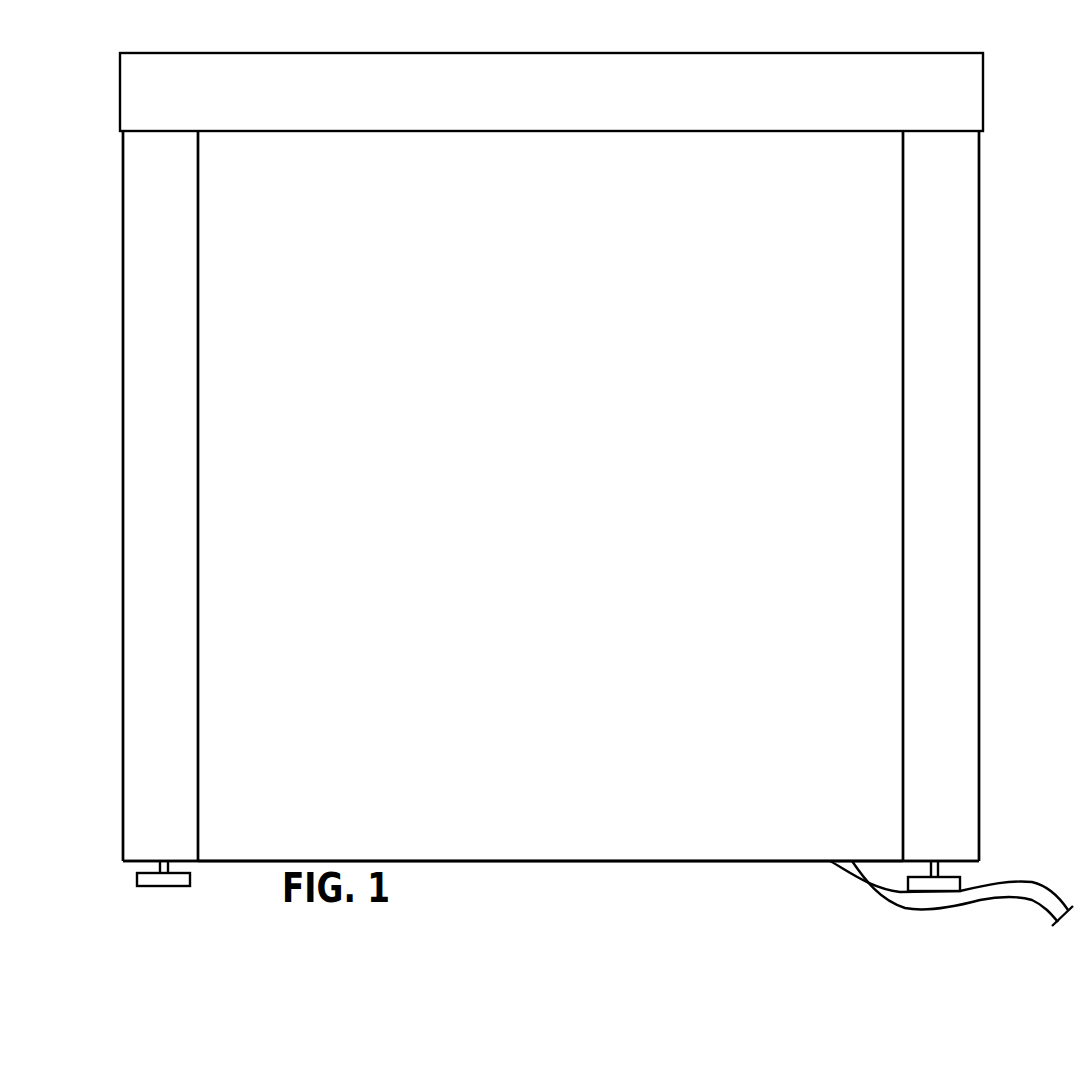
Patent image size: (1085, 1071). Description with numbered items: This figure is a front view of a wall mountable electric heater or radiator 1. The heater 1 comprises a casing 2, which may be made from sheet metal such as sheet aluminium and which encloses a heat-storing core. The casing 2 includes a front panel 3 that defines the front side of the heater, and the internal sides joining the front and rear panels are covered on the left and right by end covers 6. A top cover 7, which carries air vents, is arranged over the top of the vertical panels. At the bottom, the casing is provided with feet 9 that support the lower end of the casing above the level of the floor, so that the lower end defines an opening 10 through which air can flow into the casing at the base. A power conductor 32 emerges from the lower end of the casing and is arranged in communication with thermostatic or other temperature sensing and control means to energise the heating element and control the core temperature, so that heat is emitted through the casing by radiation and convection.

The heater 1 is at (1008, 233).
The casing 2 is at (988, 314).
The front panel 3 is at (687, 393).
The end covers 6 is at (123, 453).
The top cover 7 is at (523, 56).
The feet 9 is at (186, 881).
The opening 10 is at (580, 860).
The power conductor 32 is at (1030, 887).